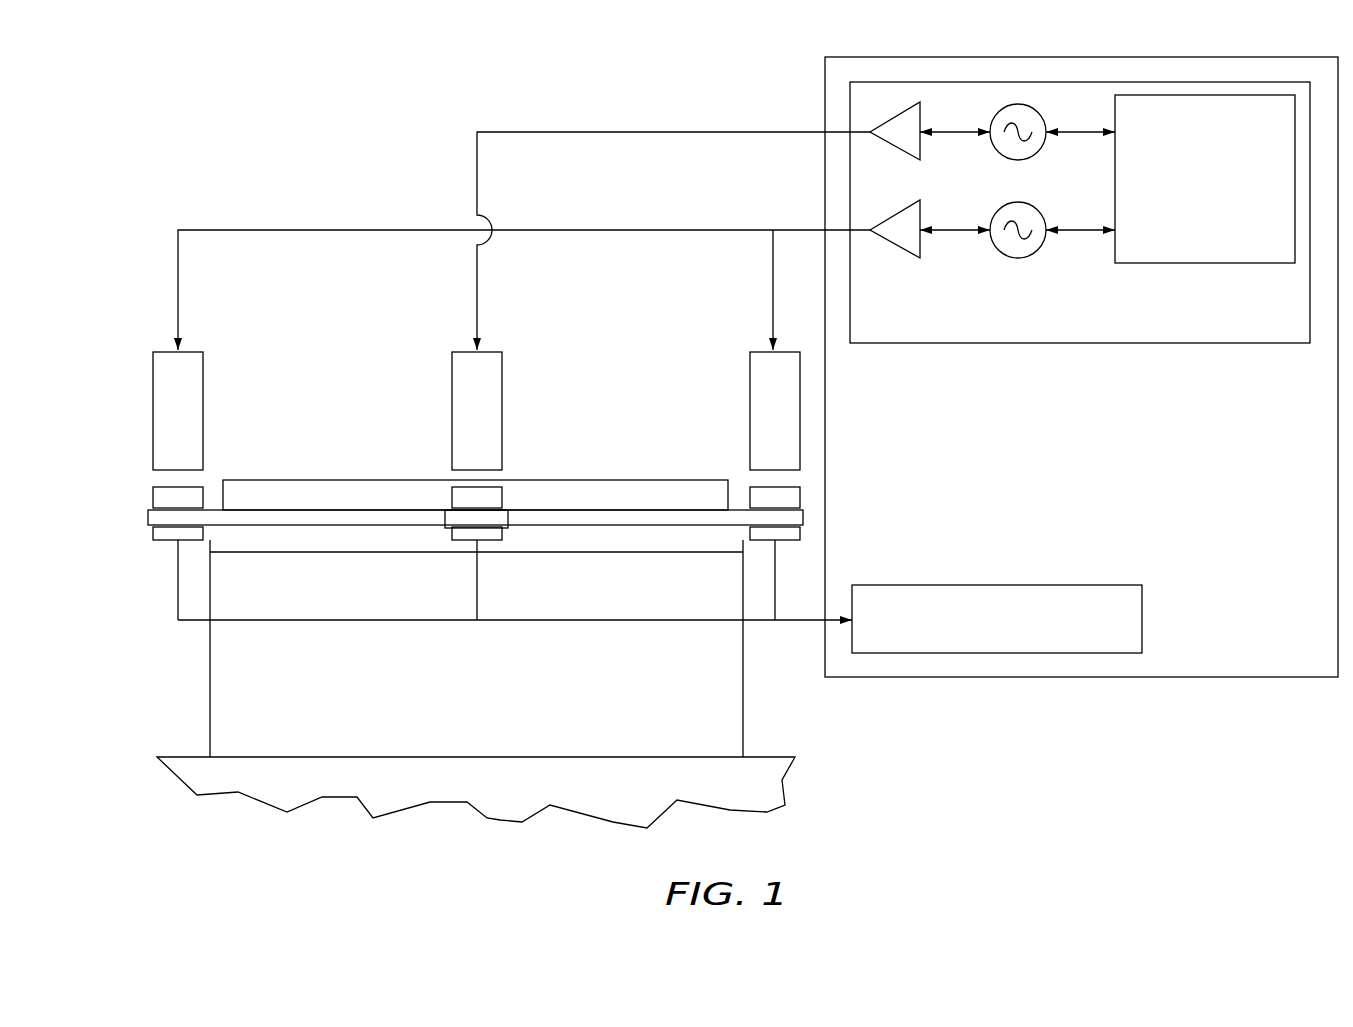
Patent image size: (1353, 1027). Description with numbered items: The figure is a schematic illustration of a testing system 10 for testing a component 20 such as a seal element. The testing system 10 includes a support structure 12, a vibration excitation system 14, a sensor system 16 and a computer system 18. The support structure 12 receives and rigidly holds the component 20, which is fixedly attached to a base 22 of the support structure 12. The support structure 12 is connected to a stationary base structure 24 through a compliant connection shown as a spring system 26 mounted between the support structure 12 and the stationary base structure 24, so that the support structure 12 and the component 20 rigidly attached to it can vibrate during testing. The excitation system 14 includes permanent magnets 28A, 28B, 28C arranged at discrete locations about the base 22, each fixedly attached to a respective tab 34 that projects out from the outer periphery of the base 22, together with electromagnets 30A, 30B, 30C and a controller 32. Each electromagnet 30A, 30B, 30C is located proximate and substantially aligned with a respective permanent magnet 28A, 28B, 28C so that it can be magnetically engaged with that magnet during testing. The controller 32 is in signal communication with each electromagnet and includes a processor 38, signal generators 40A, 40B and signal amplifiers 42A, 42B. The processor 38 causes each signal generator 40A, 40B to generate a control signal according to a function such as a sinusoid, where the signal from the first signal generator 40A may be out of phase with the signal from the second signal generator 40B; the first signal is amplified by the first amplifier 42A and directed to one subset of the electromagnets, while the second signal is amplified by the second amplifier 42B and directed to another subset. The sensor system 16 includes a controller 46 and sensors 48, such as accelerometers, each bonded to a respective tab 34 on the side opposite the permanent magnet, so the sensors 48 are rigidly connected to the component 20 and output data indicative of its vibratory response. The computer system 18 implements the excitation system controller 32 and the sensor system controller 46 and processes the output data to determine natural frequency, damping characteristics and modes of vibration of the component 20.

The testing system 10 is at (216, 150).
The support structure 12 is at (250, 557).
The vibration excitation system 14 is at (448, 213).
The sensor system 16 is at (186, 634).
The computer system 18 is at (1203, 678).
The component 20 is at (290, 478).
The base 22 is at (338, 538).
The stationary base structure 24 is at (798, 790).
The spring system 26 is at (200, 713).
The permanent magnet 28A is at (153, 502).
The permanent magnet 28B is at (502, 497).
The permanent magnet 28C is at (800, 497).
The electromagnet 30A is at (203, 375).
The electromagnet 30B is at (452, 378).
The electromagnet 30C is at (748, 378).
The controller 32 is at (1272, 347).
The tab 34 is at (148, 517).
The processor 38 is at (1207, 265).
The first signal generator 40A is at (993, 256).
The second signal generator 40B is at (1020, 160).
The first signal amplifier 42A is at (893, 210).
The second signal amplifier 42B is at (893, 110).
The controller 46 is at (1142, 617).
The sensor 48 is at (175, 540).